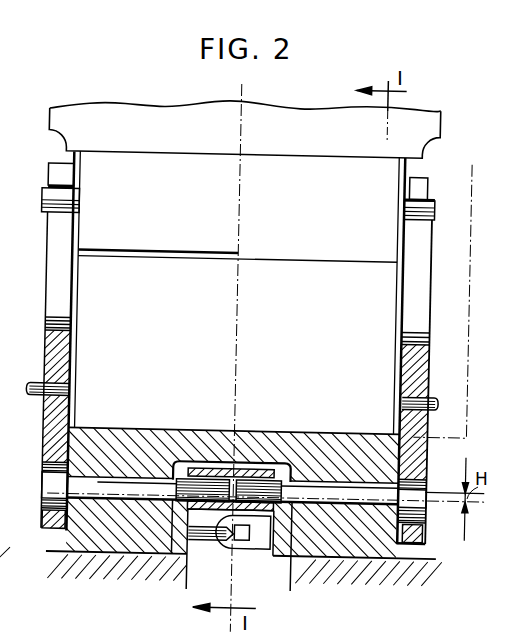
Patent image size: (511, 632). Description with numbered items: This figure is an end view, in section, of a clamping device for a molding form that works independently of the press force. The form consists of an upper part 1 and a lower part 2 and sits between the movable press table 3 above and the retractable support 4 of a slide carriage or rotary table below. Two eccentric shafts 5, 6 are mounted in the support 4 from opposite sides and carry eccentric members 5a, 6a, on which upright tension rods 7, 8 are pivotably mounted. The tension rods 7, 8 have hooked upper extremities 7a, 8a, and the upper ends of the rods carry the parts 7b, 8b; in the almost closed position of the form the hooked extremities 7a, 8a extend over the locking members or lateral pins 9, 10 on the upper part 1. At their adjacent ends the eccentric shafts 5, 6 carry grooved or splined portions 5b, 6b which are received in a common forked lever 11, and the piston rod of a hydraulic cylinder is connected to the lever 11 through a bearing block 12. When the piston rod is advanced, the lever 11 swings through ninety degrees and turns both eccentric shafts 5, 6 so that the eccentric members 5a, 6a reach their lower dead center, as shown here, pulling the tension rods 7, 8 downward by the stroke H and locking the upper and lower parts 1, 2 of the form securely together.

The upper part 1 is at (328, 166).
The lower part 2 is at (93, 282).
The movable press table 3 is at (168, 107).
The retractable support 4 is at (112, 545).
The eccentric shaft 5 is at (131, 480).
The eccentric member 5a is at (53, 482).
The splined portion 5b is at (210, 480).
The eccentric shaft 6 is at (330, 482).
The eccentric member 6a is at (413, 490).
The splined portion 6b is at (257, 480).
The tension rod 7 is at (57, 241).
The hooked upper extremity 7a is at (60, 182).
The left bolt head 7b is at (62, 170).
The tension rod 8 is at (422, 293).
The hooked upper extremity 8a is at (422, 198).
The right bolt head 8b is at (420, 187).
The lateral pin 9 is at (50, 197).
The lateral pin 10 is at (435, 213).
The forked lever 11 is at (260, 543).
The bearing block 12 is at (220, 548).